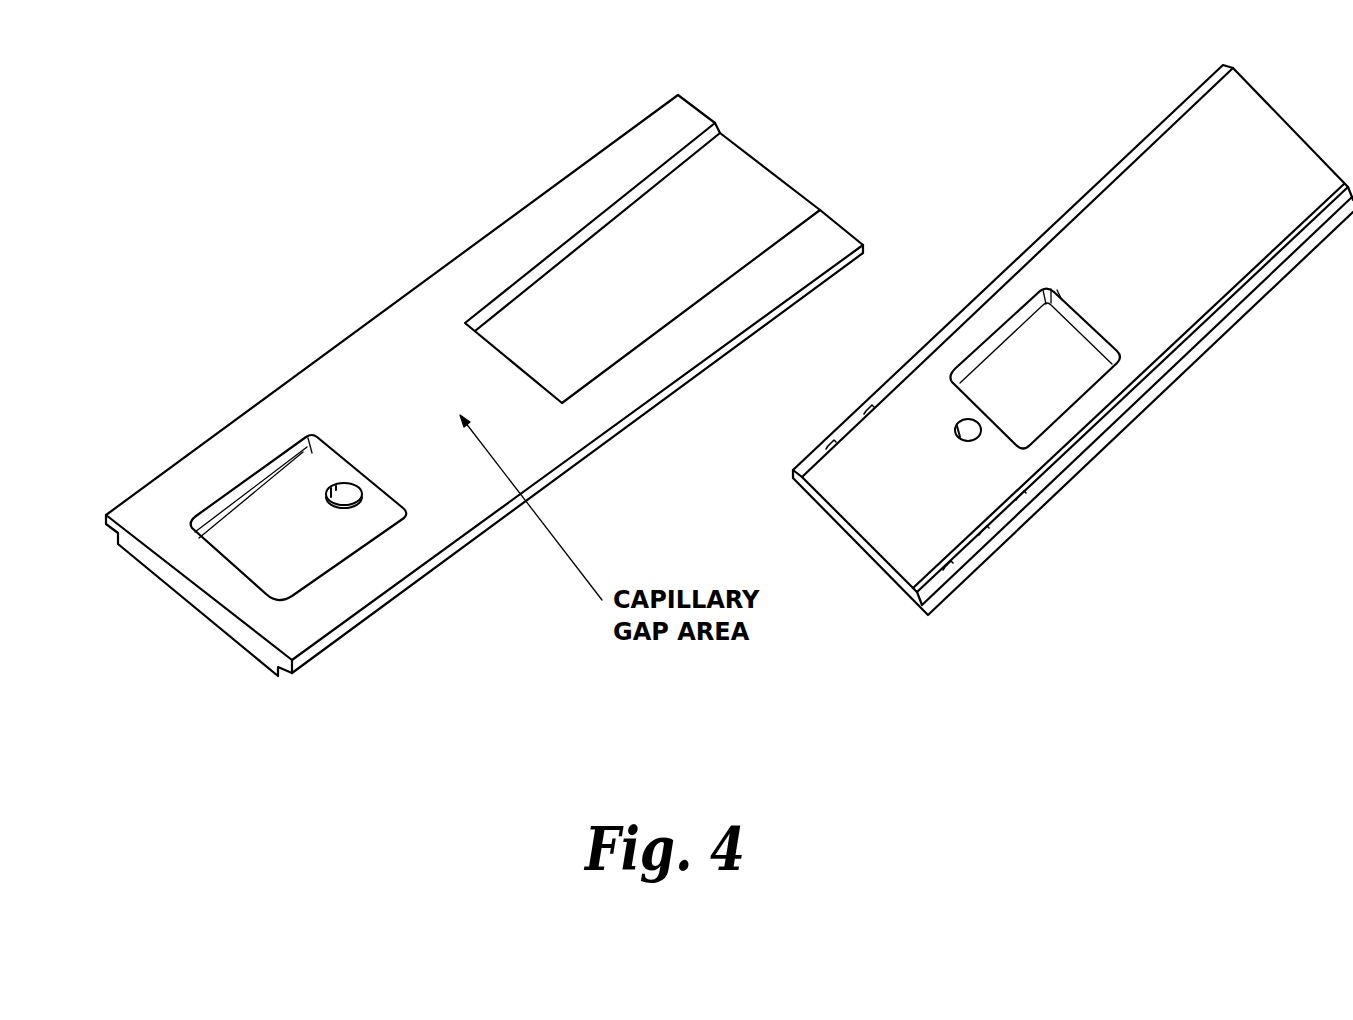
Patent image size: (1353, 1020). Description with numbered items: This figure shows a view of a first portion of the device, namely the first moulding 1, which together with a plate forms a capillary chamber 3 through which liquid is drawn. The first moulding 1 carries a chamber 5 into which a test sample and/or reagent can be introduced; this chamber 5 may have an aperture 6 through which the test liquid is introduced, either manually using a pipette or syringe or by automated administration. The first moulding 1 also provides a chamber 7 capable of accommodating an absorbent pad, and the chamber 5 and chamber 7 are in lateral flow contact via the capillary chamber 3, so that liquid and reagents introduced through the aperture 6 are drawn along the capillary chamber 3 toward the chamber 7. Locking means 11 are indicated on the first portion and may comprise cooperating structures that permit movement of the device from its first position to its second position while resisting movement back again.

The first moulding 1 is at (140, 507).
The capillary chamber 3 is at (1073, 372).
The chamber 5 is at (260, 505).
The aperture 6 is at (333, 487).
The sample receiving chamber 7 is at (558, 298).
The locking means 11 is at (976, 555).